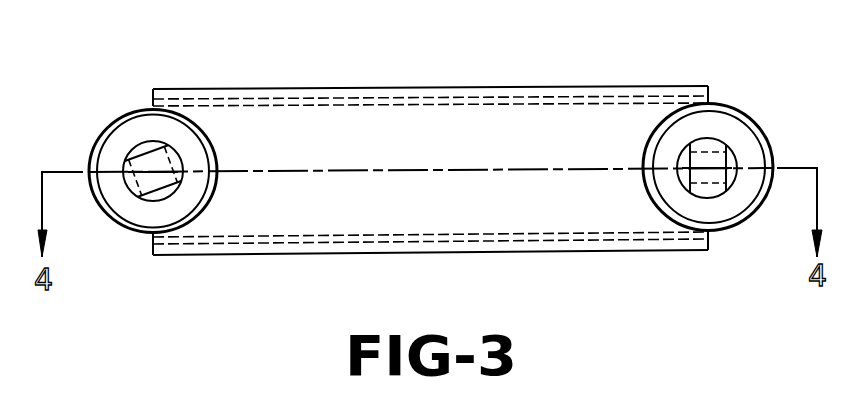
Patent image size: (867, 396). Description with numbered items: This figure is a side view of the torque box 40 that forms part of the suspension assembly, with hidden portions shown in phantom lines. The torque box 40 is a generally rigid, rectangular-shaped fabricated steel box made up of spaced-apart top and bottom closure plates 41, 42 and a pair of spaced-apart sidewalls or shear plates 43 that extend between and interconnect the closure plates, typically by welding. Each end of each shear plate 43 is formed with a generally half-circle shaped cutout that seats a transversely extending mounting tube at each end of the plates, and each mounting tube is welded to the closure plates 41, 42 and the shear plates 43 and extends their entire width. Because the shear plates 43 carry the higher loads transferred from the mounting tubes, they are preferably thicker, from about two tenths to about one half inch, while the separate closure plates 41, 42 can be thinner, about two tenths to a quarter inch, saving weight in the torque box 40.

The torque box 40 is at (387, 89).
The top closure plate 41 is at (278, 100).
The bottom closure plate 42 is at (277, 242).
The shear plate 43 is at (519, 137).